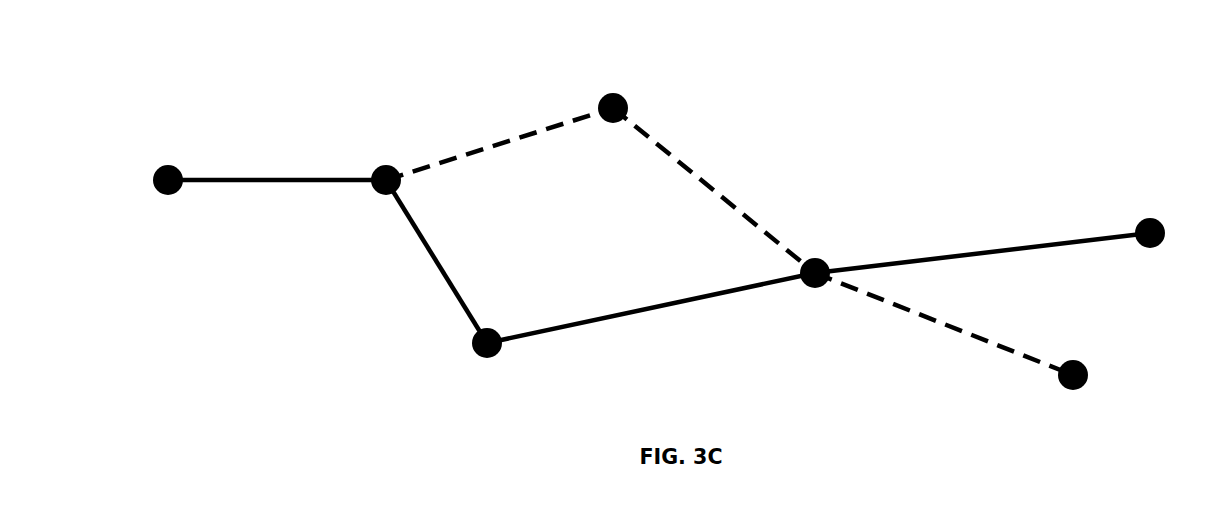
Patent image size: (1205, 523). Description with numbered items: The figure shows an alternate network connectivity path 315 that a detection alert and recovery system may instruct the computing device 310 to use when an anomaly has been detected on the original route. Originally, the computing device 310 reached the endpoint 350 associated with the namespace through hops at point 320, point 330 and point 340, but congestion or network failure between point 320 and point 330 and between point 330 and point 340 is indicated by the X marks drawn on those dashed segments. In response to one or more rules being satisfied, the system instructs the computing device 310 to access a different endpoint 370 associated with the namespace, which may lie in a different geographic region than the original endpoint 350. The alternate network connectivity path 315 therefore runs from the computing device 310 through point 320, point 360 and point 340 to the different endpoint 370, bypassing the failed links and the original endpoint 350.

The alternate network connectivity path 315 is at (84, 100).
The computing device 310 is at (168, 165).
The point 320 is at (386, 165).
The point 330 is at (613, 93).
The point 340 is at (815, 258).
The endpoint 350 is at (1073, 360).
The point 360 is at (487, 328).
The endpoint 370 is at (1150, 218).